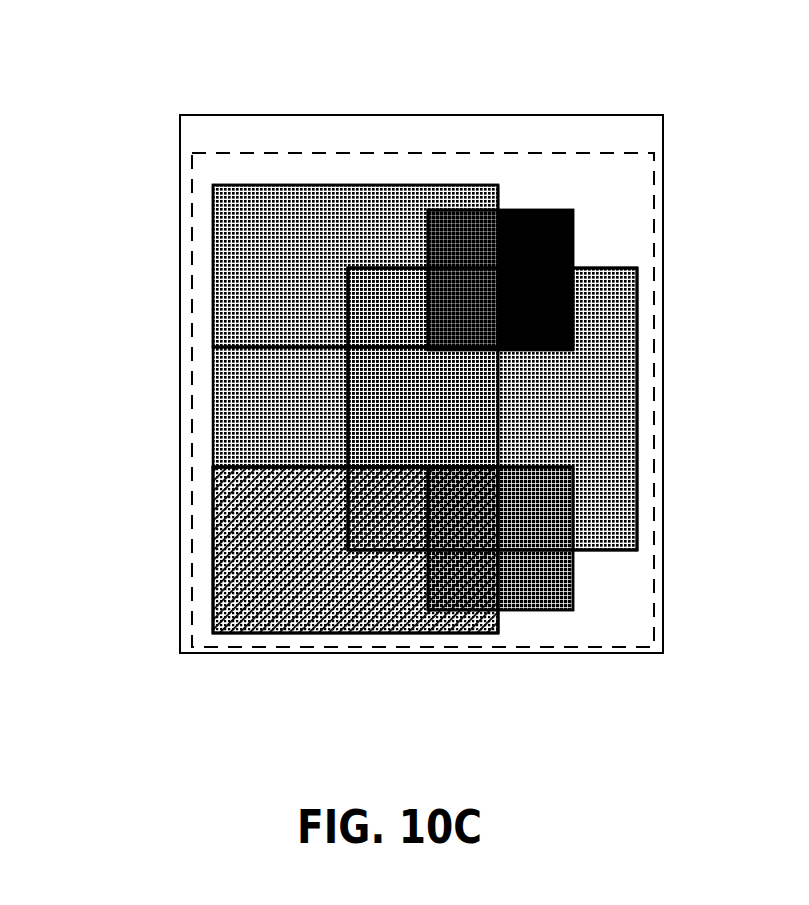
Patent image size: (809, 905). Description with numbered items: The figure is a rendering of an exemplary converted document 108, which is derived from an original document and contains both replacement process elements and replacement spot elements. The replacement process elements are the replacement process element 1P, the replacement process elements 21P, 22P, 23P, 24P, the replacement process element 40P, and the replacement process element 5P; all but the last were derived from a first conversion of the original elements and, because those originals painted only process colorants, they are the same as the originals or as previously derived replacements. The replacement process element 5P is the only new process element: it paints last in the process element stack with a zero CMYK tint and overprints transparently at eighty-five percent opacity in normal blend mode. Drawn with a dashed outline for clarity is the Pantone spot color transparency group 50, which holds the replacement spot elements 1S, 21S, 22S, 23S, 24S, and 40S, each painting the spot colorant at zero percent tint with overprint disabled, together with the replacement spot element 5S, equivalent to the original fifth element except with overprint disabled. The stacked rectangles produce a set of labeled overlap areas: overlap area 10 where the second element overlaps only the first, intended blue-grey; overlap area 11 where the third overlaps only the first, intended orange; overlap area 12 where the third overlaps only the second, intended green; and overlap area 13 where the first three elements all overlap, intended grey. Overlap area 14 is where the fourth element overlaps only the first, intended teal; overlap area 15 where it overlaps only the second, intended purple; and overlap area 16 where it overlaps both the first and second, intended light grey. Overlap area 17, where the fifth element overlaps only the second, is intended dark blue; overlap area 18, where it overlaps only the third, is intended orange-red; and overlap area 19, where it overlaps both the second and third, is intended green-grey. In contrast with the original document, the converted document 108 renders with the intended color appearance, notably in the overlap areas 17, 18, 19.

The converted document 108 is at (203, 115).
The Pantone 254M transparency group 50 is at (657, 585).
The replacement spot element 1S is at (250, 212).
The replacement process element 1P is at (280, 250).
The replacement spot element 24S is at (250, 550).
The replacement process element 24P is at (285, 550).
The replacement spot element 23S is at (262, 550).
The replacement process element 23P is at (285, 550).
The replacement spot element 22S is at (605, 303).
The replacement process element 22P is at (559, 290).
The replacement spot element 21S is at (536, 305).
The replacement process element 21P is at (556, 305).
The replacement spot element 40S is at (540, 210).
The replacement process element 40P is at (500, 177).
The replacement spot element 5S is at (537, 610).
The replacement process element 5P is at (598, 560).
The overlap area 10 is at (388, 307).
The overlap area 11 is at (355, 407).
The overlap area 12 is at (388, 508).
The overlap area 13 is at (423, 407).
The overlap area 14 is at (463, 239).
The overlap area 15 is at (535, 307).
The overlap area 16 is at (463, 307).
The overlap area 17 is at (535, 508).
The overlap area 18 is at (463, 580).
The overlap area 19 is at (463, 508).